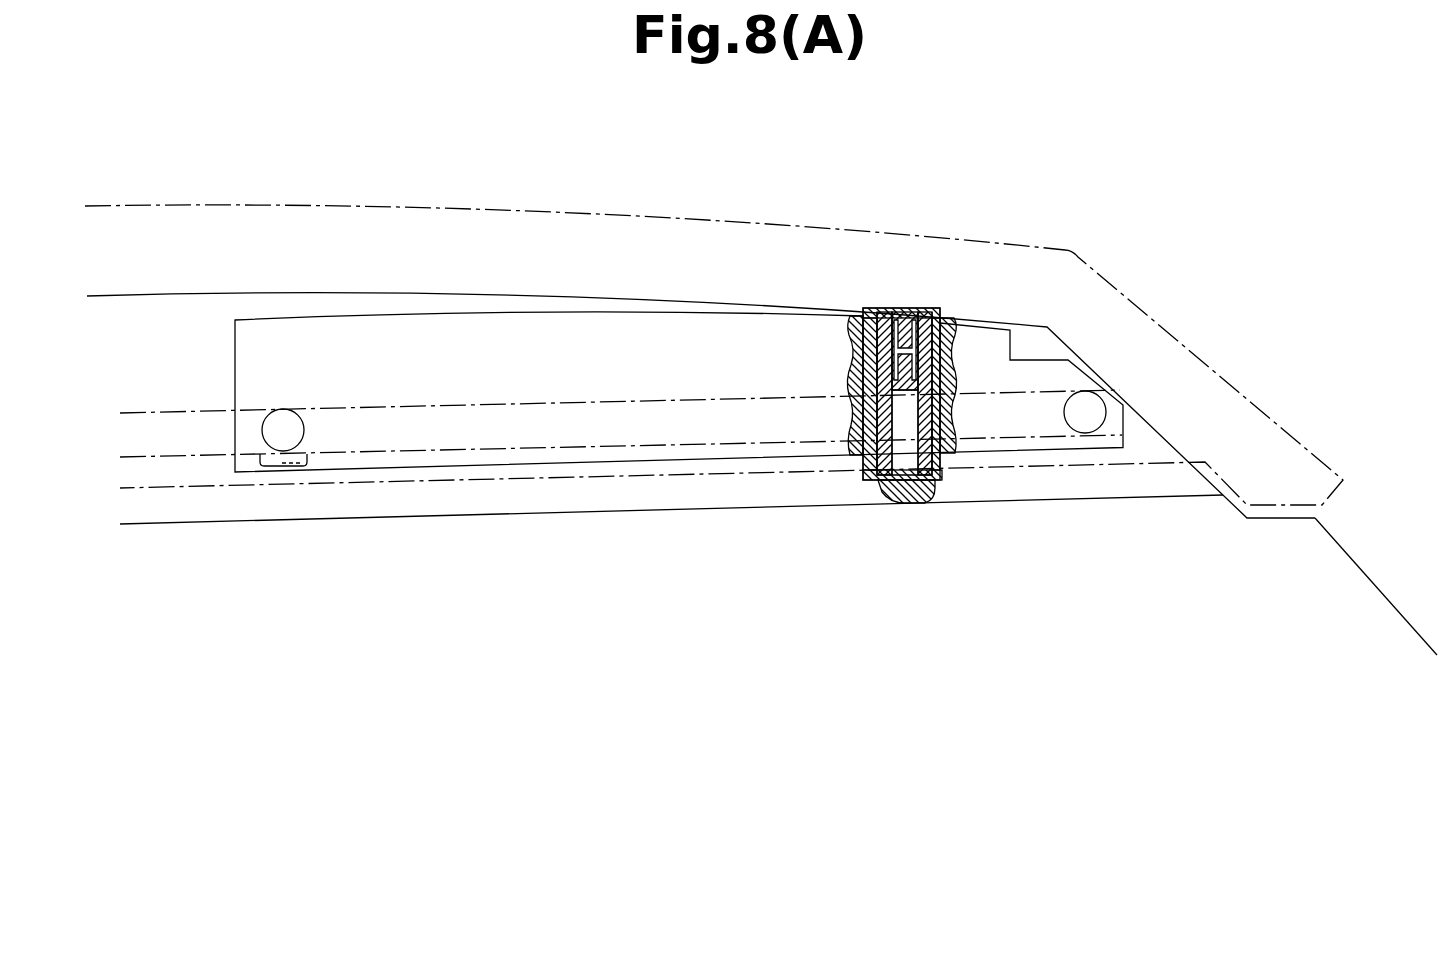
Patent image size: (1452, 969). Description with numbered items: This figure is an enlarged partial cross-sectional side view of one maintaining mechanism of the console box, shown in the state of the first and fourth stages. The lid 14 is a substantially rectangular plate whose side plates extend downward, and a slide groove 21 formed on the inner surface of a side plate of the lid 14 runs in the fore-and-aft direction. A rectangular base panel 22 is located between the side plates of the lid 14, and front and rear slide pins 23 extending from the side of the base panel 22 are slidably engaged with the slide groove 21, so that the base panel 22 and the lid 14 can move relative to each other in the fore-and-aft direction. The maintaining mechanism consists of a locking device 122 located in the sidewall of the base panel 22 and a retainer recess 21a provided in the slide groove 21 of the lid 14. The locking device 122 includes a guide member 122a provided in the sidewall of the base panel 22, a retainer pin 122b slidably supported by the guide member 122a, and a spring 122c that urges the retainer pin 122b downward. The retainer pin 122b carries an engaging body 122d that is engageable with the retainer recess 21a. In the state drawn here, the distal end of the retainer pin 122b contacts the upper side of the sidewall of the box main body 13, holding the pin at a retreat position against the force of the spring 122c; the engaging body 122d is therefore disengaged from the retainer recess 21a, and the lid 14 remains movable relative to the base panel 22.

The box main body 13 is at (1367, 567).
The lid 14 is at (224, 206).
The slide groove 21 is at (195, 412).
The retainer recess 21a is at (280, 470).
The base panel 22 is at (262, 319).
The slide pin 23 is at (292, 409).
The locking device 122 is at (936, 318).
The guide member 122a is at (945, 318).
The retainer pin 122b is at (930, 484).
The spring 122c is at (888, 318).
The engaging body 122d is at (862, 360).